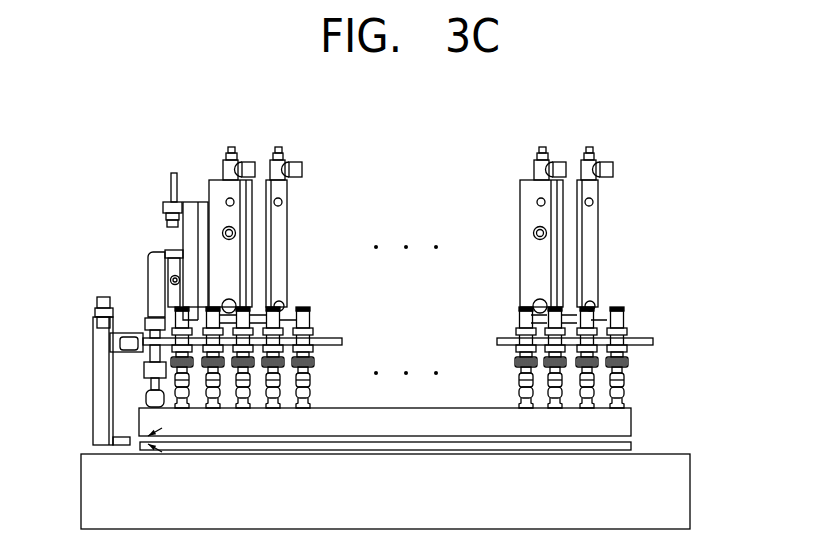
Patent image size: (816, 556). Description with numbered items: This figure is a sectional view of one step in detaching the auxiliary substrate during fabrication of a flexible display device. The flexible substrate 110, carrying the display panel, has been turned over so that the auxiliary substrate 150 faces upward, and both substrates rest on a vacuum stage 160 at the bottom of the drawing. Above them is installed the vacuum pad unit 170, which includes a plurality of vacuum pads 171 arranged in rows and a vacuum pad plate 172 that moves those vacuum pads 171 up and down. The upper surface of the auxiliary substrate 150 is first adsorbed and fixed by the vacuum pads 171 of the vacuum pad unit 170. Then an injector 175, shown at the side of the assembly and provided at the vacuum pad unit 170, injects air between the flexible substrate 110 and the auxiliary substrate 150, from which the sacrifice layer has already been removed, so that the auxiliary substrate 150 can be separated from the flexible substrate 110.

The vacuum pad unit 170 is at (678, 148).
The vacuum pads 171 is at (626, 387).
The vacuum pad plate 172 is at (653, 341).
The injector 175 is at (102, 383).
The auxiliary substrate 150 is at (628, 415).
The flexible substrate 110 is at (628, 448).
The vacuum stage 160 is at (682, 493).